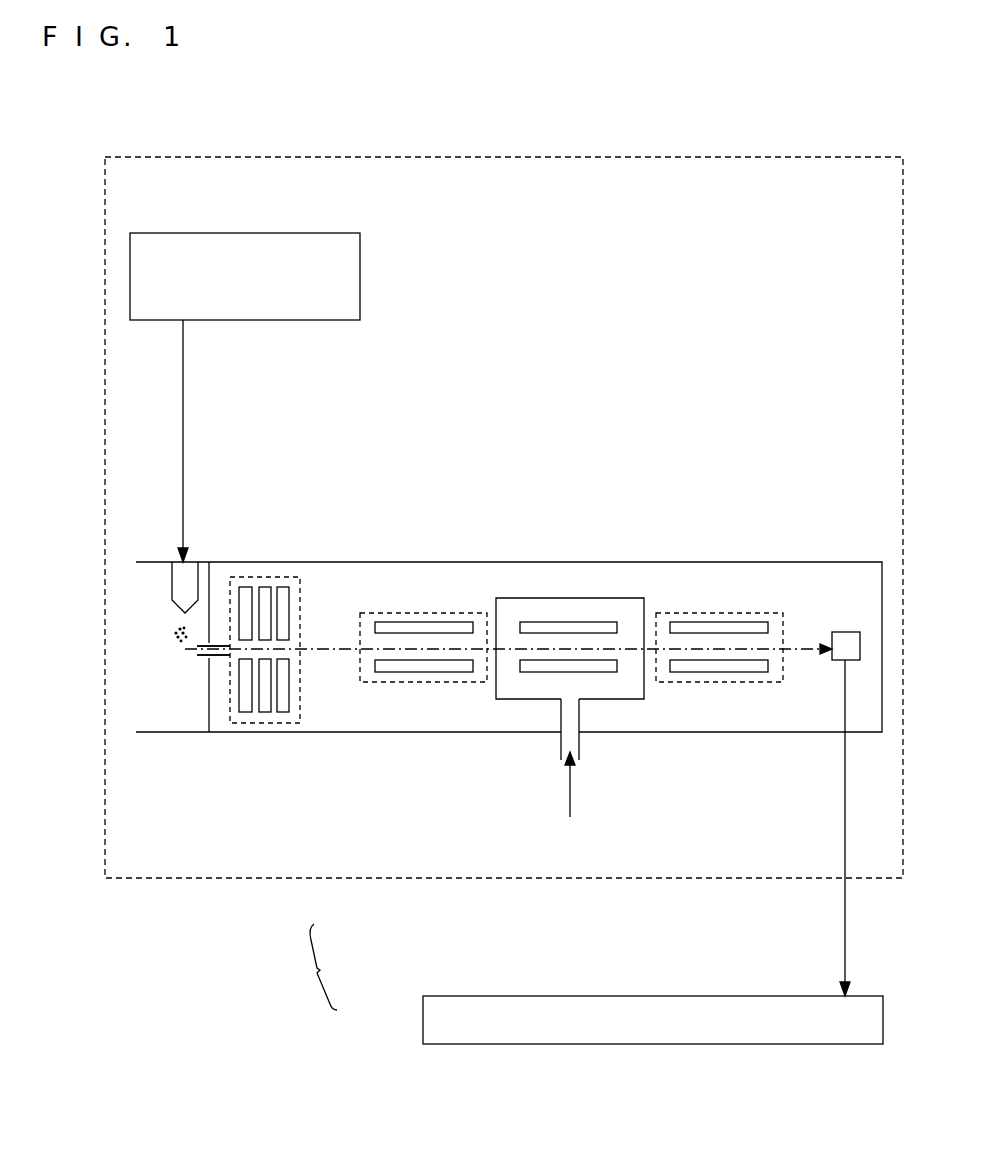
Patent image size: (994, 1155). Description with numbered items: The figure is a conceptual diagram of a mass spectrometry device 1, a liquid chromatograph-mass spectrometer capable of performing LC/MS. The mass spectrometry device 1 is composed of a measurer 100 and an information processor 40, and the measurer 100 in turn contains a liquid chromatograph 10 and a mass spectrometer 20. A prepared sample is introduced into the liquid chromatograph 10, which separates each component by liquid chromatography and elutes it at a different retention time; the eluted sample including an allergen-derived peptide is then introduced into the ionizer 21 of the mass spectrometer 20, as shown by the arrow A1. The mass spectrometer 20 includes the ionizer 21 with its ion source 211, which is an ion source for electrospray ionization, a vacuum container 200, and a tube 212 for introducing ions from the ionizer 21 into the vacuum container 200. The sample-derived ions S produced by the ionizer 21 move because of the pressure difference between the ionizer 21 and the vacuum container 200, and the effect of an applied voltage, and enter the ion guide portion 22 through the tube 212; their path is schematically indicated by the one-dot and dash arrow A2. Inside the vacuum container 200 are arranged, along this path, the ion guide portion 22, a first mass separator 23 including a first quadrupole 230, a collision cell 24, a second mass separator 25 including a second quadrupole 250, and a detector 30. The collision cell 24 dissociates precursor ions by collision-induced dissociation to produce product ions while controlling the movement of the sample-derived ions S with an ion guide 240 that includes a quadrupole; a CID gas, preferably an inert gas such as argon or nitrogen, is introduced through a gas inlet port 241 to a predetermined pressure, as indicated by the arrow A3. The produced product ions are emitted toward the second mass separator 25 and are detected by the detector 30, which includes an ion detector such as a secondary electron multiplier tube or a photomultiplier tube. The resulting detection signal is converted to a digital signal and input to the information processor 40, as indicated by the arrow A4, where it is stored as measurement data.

The mass spectrometry device 1 is at (310, 967).
The liquid chromatograph 10 is at (356, 214).
The mass spectrometer 20 is at (820, 484).
The ionizer 21 is at (160, 562).
The ion guide portion 22 is at (258, 578).
The first mass separator 23 is at (423, 592).
The collision cell 24 is at (585, 645).
The second mass separator 25 is at (719, 592).
The detector 30 is at (843, 632).
The information processor 40 is at (423, 1010).
The measurer 100 is at (348, 912).
The vacuum container 200 is at (328, 575).
The ion source 211 is at (185, 582).
The tube 212 is at (205, 768).
The first quadrupole 230 is at (452, 528).
The ion guide 240 is at (575, 622).
The gas inlet port 241 is at (628, 768).
The second quadrupole 250 is at (740, 528).
The sample-derived ions S is at (158, 773).
The arrow A1 is at (213, 410).
The one-dot and dash arrow A2 is at (787, 790).
The arrow A3 is at (613, 815).
The arrow A4 is at (845, 935).